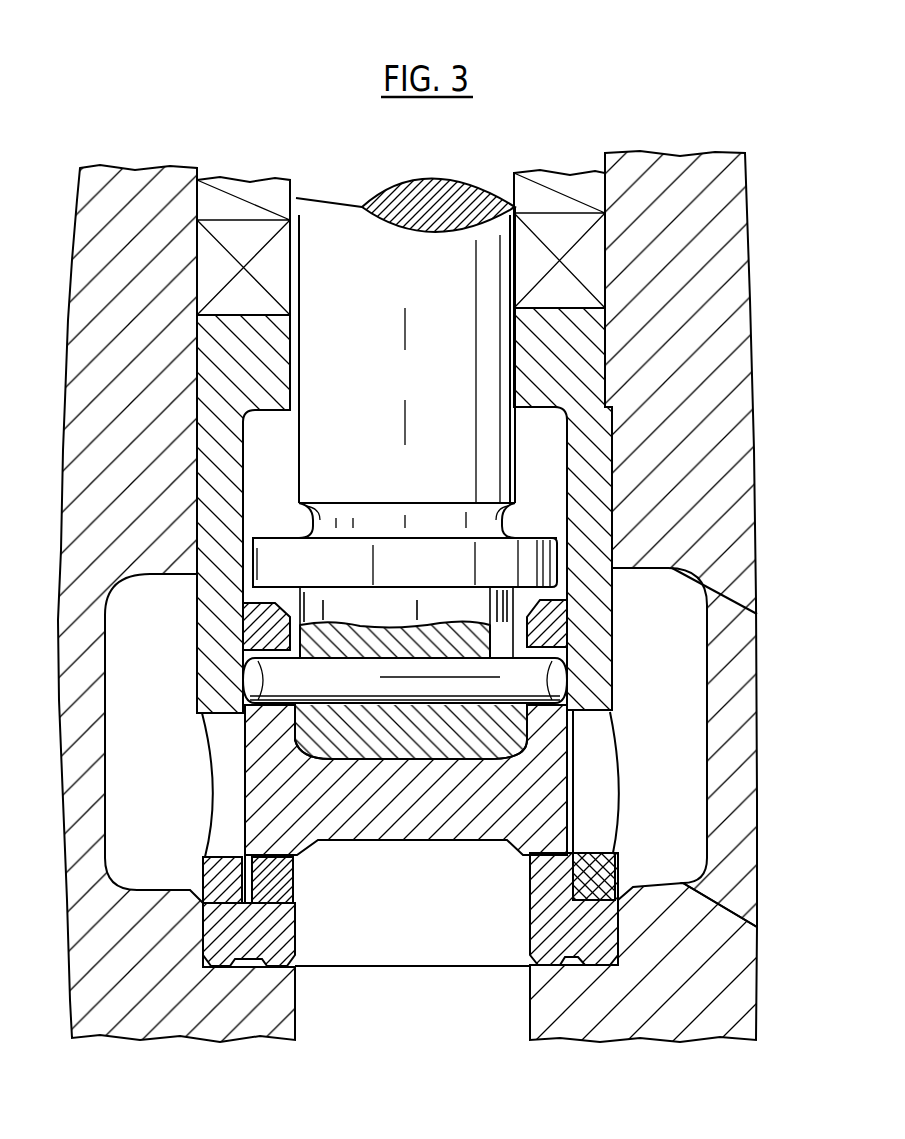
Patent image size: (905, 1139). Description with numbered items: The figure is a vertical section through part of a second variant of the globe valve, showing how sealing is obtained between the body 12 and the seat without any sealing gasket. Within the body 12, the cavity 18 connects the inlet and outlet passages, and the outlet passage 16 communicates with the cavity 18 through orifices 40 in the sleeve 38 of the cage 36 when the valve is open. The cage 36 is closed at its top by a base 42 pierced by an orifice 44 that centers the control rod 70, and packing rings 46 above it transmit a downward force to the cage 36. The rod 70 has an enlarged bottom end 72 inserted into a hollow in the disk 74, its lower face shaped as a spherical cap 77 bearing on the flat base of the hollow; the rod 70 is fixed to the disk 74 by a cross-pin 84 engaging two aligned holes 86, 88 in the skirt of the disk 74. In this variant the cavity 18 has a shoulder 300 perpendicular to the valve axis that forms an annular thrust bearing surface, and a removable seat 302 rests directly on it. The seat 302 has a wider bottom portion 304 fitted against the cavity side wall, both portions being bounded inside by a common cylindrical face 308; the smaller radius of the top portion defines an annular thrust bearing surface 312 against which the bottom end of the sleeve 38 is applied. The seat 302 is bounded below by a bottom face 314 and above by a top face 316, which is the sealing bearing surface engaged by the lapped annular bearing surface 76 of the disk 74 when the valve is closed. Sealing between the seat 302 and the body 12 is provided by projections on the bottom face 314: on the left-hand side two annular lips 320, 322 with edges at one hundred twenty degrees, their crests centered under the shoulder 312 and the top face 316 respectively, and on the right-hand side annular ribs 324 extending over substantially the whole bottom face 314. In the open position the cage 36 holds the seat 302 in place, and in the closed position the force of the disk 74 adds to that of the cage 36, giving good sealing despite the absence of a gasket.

The body 12 is at (110, 1018).
The outlet passage 16 is at (735, 785).
The cavity 18 is at (128, 770).
The cage 36 is at (612, 500).
The sleeve 38 is at (603, 692).
The orifices 40 is at (588, 748).
The base 42 is at (225, 343).
The orifice 44 is at (298, 340).
The packing rings 46 is at (603, 265).
The control rod 70 is at (372, 394).
The bottom end 72 is at (477, 638).
The disk 74 is at (367, 807).
The lapped annular bearing surface 76 is at (296, 880).
The spherical cap 77 is at (232, 750).
The cross-pin 84 is at (348, 680).
The hole 86 is at (563, 677).
The hole 88 is at (245, 672).
The shoulder 300 is at (582, 962).
The removable seat 302 is at (267, 875).
The bottom portion 304 is at (218, 933).
The cylindrical face 308 is at (300, 918).
The annular thrust bearing surface 312 is at (597, 890).
The bottom face 314 is at (538, 978).
The top face 316 is at (585, 835).
The annular lip 320 is at (220, 973).
The annular lip 322 is at (272, 975).
The annular ribs 324 is at (625, 972).